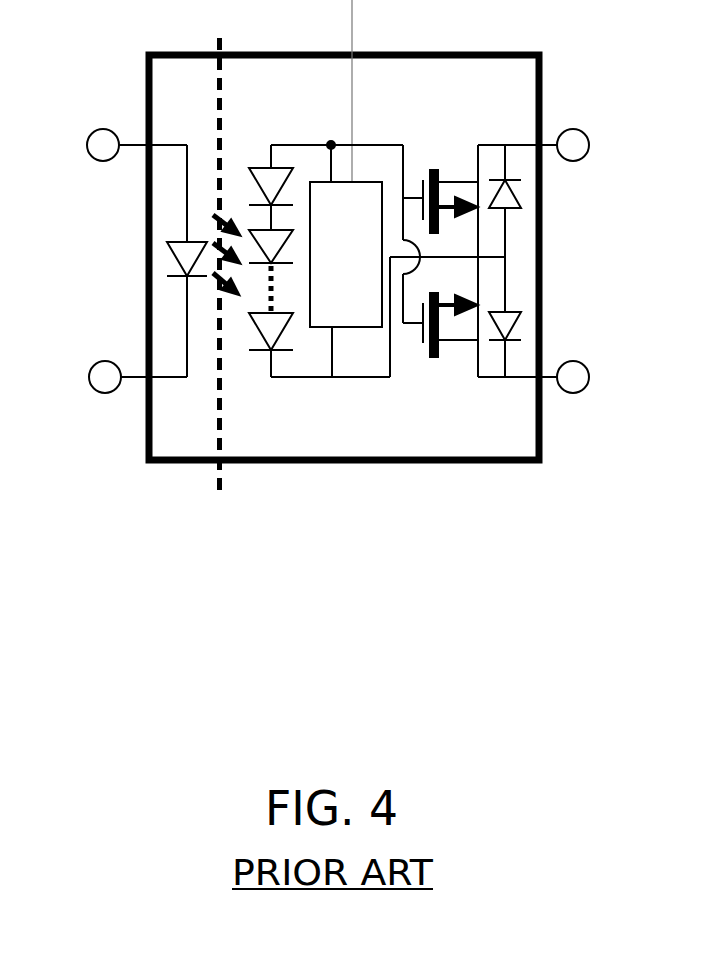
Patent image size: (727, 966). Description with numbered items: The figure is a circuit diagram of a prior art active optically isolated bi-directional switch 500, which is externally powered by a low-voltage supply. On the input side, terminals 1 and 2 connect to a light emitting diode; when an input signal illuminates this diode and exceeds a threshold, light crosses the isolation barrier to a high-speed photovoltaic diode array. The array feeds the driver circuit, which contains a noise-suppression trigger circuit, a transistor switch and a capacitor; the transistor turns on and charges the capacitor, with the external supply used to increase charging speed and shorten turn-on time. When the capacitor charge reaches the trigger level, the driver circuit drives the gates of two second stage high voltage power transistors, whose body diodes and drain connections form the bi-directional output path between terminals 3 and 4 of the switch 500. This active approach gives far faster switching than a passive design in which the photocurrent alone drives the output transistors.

The optically isolated bi-directional switch 500 is at (344, 290).
The input terminal 1 is at (123, 146).
The input terminal 2 is at (123, 378).
The output terminal 3 is at (585, 378).
The output terminal 4 is at (585, 146).